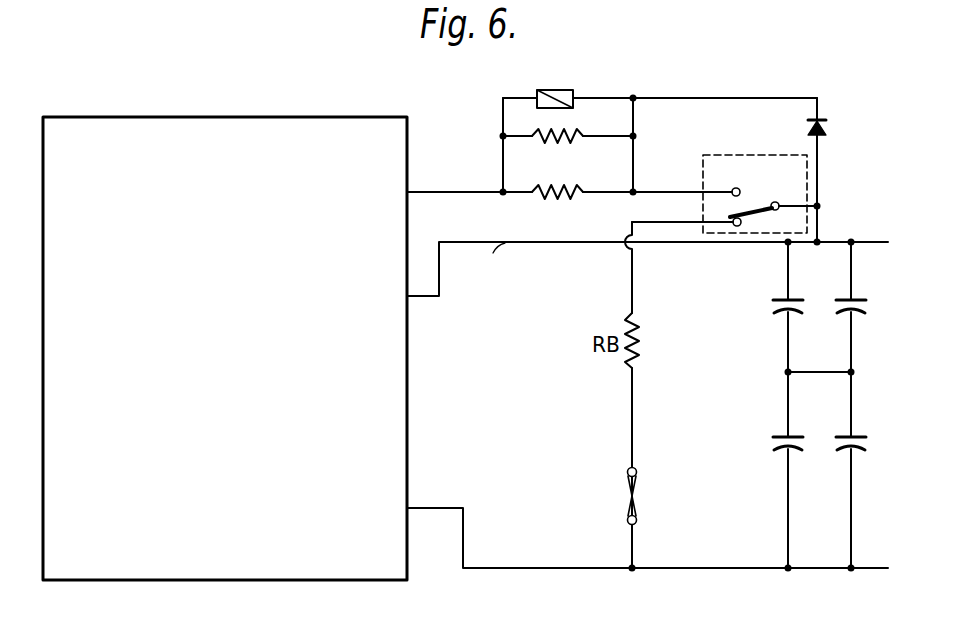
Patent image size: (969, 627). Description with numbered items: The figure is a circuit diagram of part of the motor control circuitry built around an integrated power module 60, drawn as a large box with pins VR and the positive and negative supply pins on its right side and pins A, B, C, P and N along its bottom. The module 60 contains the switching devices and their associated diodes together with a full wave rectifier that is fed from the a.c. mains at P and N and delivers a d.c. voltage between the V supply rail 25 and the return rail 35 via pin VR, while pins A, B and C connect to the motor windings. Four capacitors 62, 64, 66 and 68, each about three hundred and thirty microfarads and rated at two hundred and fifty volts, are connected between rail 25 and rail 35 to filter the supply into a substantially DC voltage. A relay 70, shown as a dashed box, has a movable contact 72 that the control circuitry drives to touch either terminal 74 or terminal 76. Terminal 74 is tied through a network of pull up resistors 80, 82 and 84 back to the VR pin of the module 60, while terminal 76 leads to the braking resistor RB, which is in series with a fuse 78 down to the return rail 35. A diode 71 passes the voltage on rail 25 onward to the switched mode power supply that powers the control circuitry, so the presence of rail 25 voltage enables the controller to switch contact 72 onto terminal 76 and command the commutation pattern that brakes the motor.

The integrated power module 60 is at (238, 190).
The pull up resistor 80 is at (575, 92).
The pull up resistor 82 is at (579, 132).
The pull up resistor 84 is at (578, 190).
The relay 70 is at (738, 153).
The diode 71 is at (825, 135).
The relay contact 72 is at (758, 203).
The terminal 74 is at (738, 187).
The terminal 76 is at (737, 227).
The V supply rail 25 is at (570, 244).
The VS- rail 35 is at (488, 567).
The fuse 78 is at (628, 487).
The capacitor 62 is at (773, 305).
The capacitor 64 is at (863, 305).
The capacitor 66 is at (773, 443).
The capacitor 68 is at (863, 443).